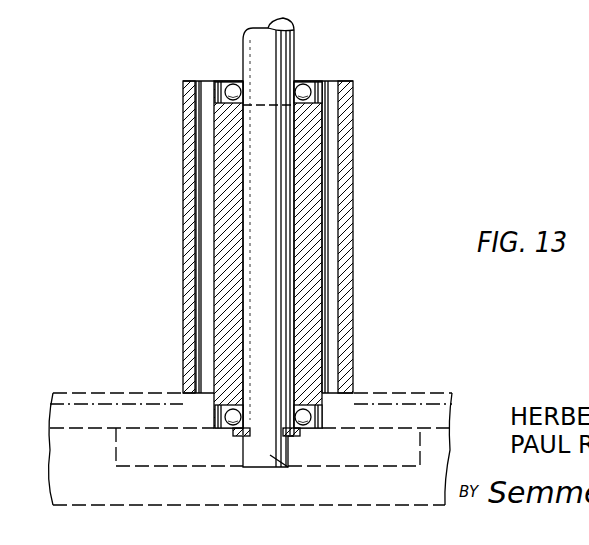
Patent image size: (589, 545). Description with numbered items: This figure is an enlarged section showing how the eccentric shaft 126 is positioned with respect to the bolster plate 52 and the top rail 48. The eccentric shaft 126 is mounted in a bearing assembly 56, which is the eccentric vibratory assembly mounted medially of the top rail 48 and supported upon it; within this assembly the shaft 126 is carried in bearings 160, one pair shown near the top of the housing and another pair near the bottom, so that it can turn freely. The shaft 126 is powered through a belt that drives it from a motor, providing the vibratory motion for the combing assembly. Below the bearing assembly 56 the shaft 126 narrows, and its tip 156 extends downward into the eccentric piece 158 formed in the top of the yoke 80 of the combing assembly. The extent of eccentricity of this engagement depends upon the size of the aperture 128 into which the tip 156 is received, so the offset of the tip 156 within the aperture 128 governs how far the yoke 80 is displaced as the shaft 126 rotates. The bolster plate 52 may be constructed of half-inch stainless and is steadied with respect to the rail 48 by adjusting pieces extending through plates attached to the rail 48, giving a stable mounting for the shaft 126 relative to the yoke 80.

The eccentric shaft 126 is at (272, 55).
The bearings 160 is at (304, 93).
The bearing assembly 56 is at (354, 219).
The top rail 48 is at (107, 400).
The bolster plate 52 is at (163, 417).
The yoke 80 is at (158, 490).
The aperture 128 is at (293, 452).
The eccentric piece 158 is at (268, 447).
The tip 156 is at (288, 468).